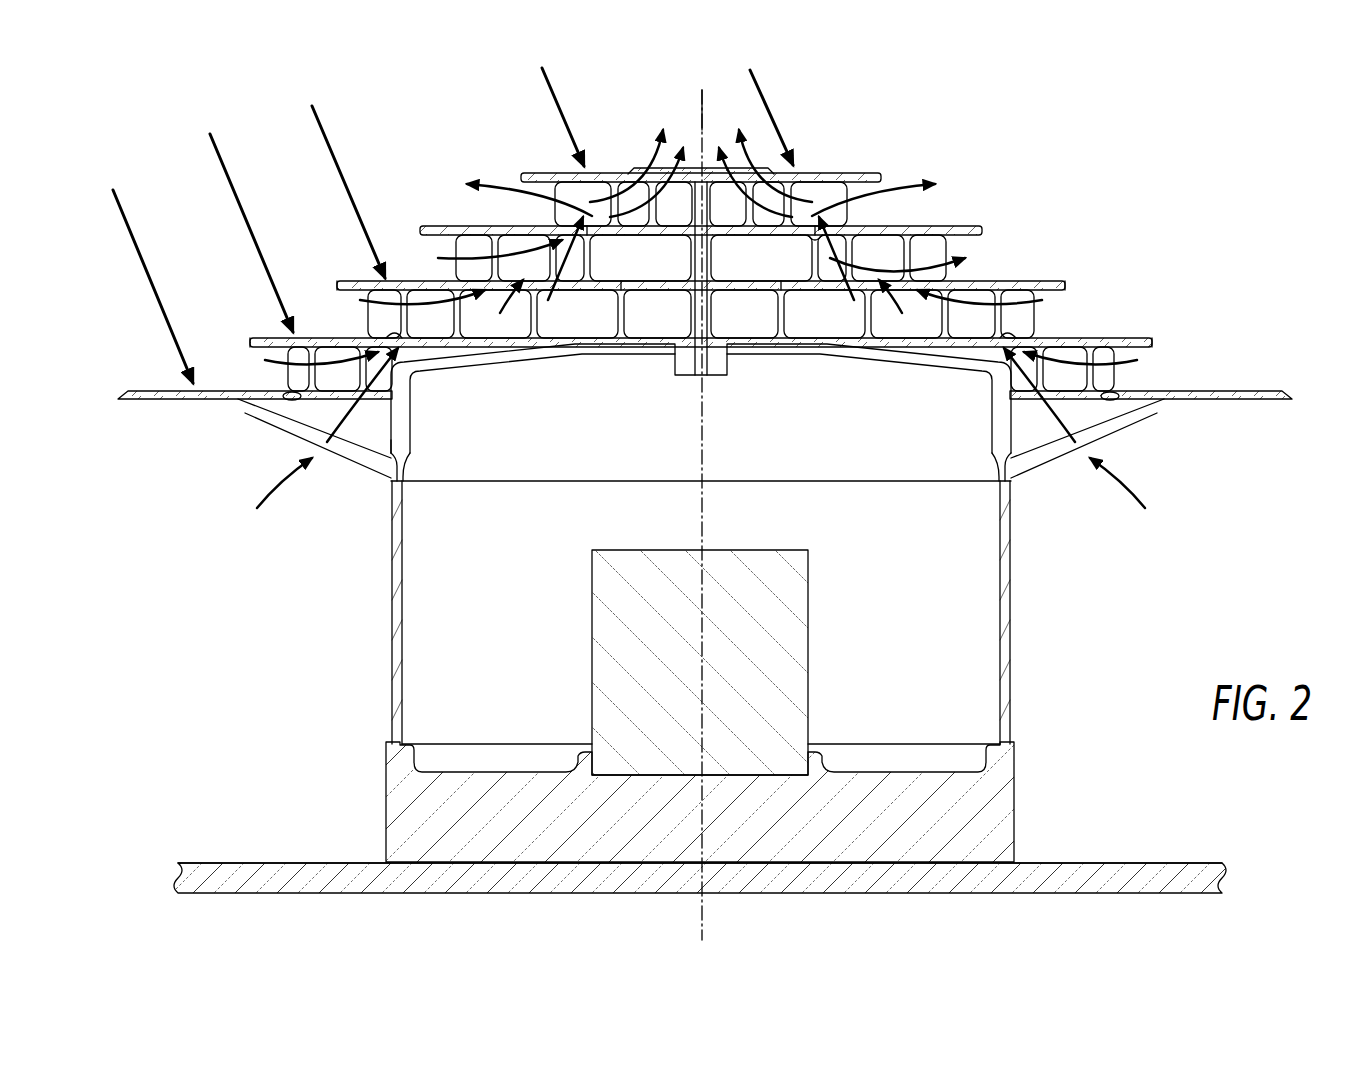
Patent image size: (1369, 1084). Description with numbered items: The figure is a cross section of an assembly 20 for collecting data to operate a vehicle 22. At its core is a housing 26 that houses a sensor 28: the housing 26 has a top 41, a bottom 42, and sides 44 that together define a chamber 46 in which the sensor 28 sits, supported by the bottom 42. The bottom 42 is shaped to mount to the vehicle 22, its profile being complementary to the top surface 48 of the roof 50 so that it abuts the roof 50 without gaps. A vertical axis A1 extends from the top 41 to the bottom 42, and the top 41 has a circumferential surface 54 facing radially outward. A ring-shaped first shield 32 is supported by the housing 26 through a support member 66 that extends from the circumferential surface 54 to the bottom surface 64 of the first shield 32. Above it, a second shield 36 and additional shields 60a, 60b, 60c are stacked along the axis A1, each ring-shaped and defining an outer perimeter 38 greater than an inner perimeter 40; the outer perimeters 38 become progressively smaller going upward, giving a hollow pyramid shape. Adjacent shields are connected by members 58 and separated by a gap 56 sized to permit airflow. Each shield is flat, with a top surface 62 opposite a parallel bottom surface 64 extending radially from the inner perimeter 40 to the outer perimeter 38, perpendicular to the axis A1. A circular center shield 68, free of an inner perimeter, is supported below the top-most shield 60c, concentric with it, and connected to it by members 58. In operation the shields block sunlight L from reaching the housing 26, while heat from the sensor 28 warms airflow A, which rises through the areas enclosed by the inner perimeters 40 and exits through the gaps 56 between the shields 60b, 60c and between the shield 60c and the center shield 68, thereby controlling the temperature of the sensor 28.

The assembly 20 is at (1232, 150).
The vehicle 22 is at (190, 792).
The housing 26 is at (1125, 545).
The sensor 28 is at (600, 688).
The first shield 32 is at (133, 391).
The second shield 36 is at (268, 338).
The outer perimeter 38 is at (525, 176).
The inner perimeter 40 is at (815, 236).
The top 41 is at (968, 455).
The bottom 42 is at (1010, 808).
The sides 44 is at (1010, 622).
The chamber 46 is at (486, 575).
The top surface 48 is at (290, 862).
The roof 50 is at (340, 893).
The circumferential surface 54 is at (386, 466).
The gap 56 is at (528, 218).
The member 58 is at (616, 228).
The additional shield 60a is at (375, 283).
The additional shield 60b is at (445, 228).
The additional shield 60c is at (560, 173).
The top surface 62 is at (290, 330).
The bottom surface 64 is at (155, 400).
The support member 66 is at (290, 412).
The center shield 68 is at (660, 226).
The airflow A is at (368, 412).
The vertical axis A1 is at (700, 108).
The sunlight L is at (228, 171).